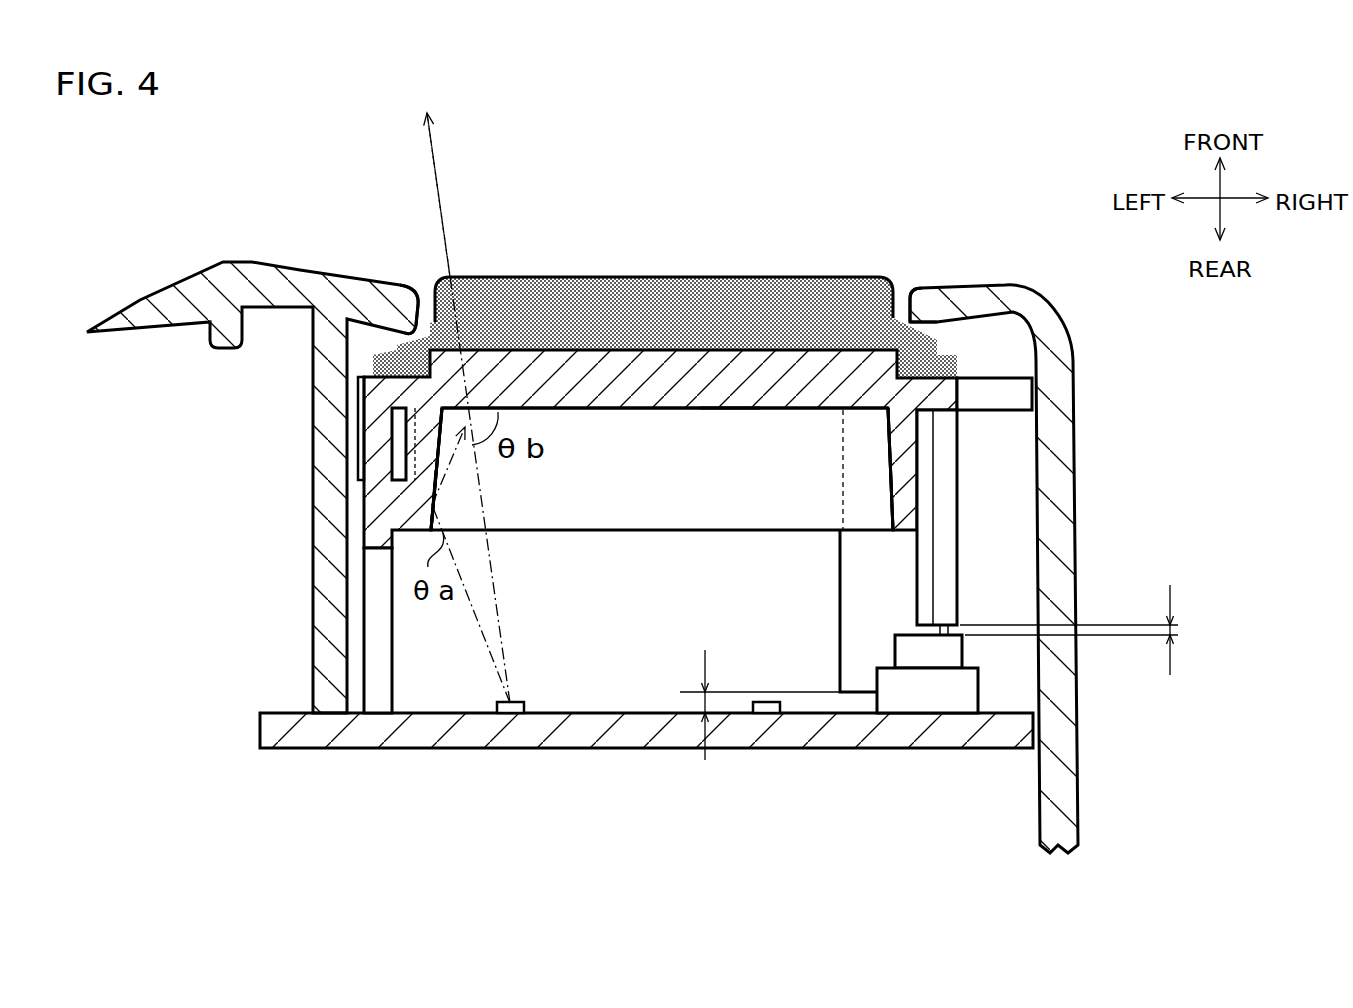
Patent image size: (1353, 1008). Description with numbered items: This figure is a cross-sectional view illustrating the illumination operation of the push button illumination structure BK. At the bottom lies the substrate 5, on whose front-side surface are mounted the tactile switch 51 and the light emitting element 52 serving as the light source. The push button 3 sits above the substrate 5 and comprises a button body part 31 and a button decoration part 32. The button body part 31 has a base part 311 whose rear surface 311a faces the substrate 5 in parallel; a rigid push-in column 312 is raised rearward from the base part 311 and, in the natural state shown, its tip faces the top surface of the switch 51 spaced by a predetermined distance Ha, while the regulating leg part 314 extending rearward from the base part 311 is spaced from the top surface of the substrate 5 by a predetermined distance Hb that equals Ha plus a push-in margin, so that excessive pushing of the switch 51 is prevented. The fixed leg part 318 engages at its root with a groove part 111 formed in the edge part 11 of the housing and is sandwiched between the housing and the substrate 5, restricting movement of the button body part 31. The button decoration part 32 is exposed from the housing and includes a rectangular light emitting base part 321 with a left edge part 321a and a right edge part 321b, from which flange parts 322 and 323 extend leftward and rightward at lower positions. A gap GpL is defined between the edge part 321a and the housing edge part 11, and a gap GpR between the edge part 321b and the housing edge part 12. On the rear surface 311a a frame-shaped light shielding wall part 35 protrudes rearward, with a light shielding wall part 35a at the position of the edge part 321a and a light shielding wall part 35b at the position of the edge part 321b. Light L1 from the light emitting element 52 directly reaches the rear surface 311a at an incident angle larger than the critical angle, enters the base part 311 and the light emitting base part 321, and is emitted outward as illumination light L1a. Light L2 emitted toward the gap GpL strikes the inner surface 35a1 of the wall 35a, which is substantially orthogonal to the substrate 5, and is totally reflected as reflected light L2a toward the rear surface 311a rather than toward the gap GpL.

The push button 3 is at (693, 429).
The substrate 5 is at (660, 750).
The edge part 11 is at (340, 267).
The edge part 12 is at (970, 287).
The button body part 31 is at (768, 410).
The button decoration part 32 is at (695, 277).
The light shielding wall part 35 is at (640, 532).
The switch 51 is at (960, 647).
The light emitting element 52 is at (512, 700).
The groove part 111 is at (372, 440).
The base part 311 is at (658, 410).
The rear surface 311a is at (728, 410).
The push-in column 312 is at (960, 543).
The regulating leg part 314 is at (840, 557).
The fixed leg part 318 is at (393, 612).
The light emitting base part 321 is at (748, 277).
The edge part 321a is at (436, 288).
The edge part 321b is at (895, 290).
The flange part 322 is at (412, 280).
The flange part 323 is at (922, 322).
The light shielding wall part 35a is at (373, 490).
The inner surface 35a1 is at (434, 500).
The light shielding wall part 35b is at (882, 490).
The push button illumination structure BK is at (688, 147).
The gap GpL is at (420, 282).
The gap GpR is at (906, 282).
The light L1 is at (490, 545).
The illumination light L1a is at (441, 197).
The light L2 is at (478, 603).
The reflected light L2a is at (450, 457).
The predetermined distance Ha is at (1088, 630).
The predetermined distance Hb is at (751, 705).